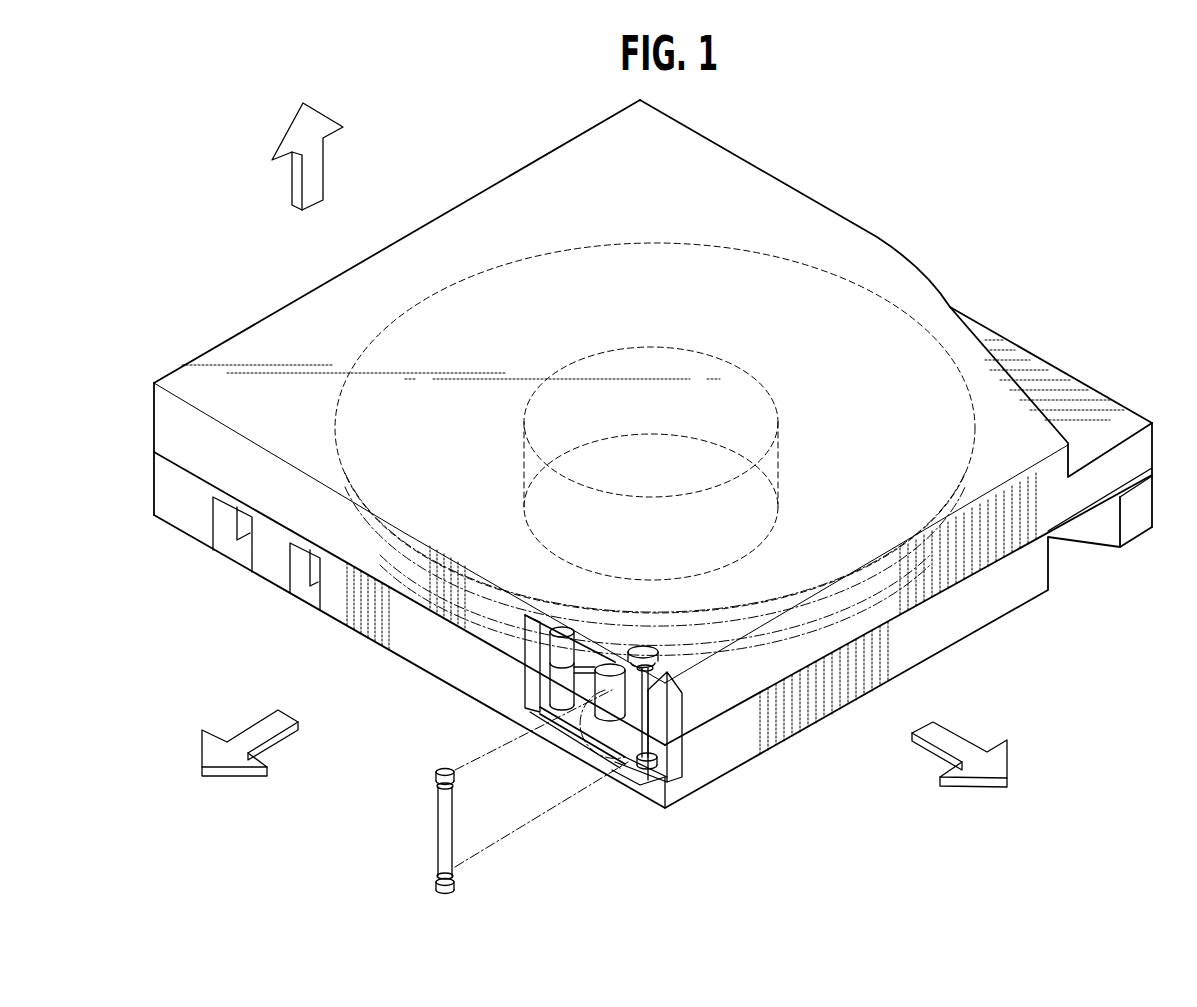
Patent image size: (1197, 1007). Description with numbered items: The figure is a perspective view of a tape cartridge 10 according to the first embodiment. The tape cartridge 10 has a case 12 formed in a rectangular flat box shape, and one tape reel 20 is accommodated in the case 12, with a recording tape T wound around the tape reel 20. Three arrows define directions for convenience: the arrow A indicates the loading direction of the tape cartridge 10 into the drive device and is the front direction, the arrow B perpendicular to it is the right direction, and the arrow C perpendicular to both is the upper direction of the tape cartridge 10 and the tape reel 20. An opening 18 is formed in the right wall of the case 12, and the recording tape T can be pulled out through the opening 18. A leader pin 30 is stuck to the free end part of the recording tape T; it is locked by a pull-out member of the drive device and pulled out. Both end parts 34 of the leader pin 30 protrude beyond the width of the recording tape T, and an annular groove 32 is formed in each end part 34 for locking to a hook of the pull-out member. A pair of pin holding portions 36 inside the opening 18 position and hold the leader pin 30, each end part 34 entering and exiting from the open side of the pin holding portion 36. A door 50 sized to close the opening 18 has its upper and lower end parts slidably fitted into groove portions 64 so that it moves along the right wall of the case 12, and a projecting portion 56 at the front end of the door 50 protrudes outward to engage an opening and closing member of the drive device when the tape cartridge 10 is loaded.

The tape cartridge 10 is at (903, 186).
The case 12 is at (1030, 348).
The opening 18 is at (527, 720).
The tape reel 20 is at (650, 242).
The leader pin 30 is at (573, 808).
The annular groove 32 is at (438, 788).
The end part 34 is at (436, 768).
The pin holding portion 36 is at (618, 780).
The door 50 is at (492, 691).
The projecting portion 56 is at (525, 686).
The groove portion 64 is at (641, 658).
The arrow A is at (953, 737).
The arrow B is at (262, 728).
The arrow C is at (313, 168).
The recording tape T is at (530, 830).